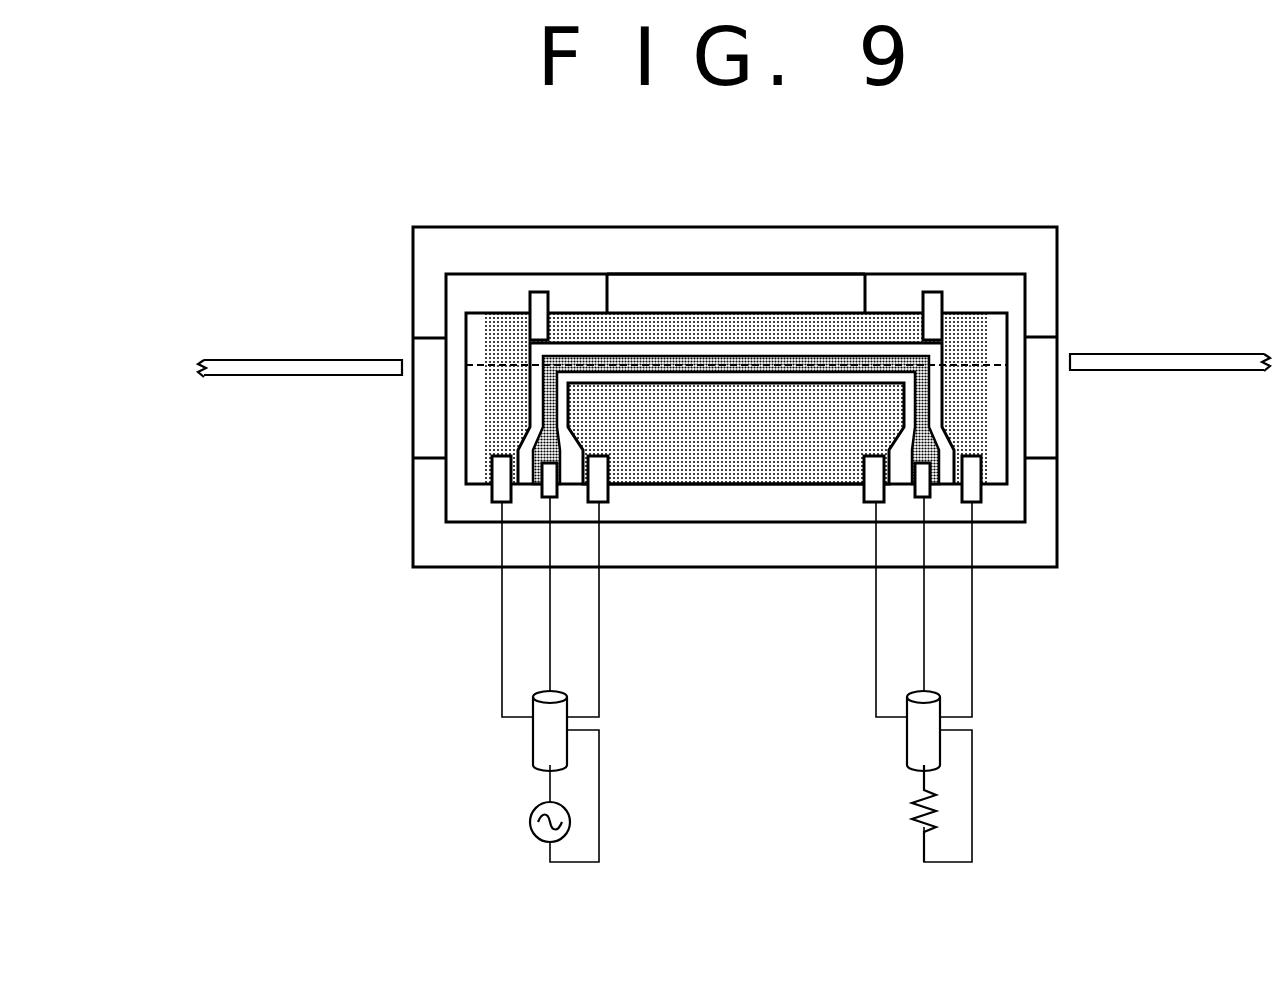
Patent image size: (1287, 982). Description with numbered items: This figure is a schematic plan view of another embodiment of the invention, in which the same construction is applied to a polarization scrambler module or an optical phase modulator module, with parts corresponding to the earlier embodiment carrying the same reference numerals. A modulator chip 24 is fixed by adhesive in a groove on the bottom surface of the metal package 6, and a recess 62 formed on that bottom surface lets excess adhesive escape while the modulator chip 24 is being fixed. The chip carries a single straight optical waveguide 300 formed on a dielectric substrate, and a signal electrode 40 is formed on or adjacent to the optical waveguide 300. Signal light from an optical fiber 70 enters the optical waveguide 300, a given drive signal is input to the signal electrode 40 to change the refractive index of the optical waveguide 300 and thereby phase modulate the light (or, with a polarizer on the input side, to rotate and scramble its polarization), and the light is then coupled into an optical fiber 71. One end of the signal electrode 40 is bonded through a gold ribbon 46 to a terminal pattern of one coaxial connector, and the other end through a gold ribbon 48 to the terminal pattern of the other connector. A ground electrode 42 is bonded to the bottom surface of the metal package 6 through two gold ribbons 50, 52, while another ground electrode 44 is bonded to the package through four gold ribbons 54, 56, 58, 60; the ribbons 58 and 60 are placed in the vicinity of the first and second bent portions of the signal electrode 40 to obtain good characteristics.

The metal package 6 is at (1032, 232).
The modulator chip 24 is at (1008, 397).
The signal electrode 40 is at (686, 357).
The ground electrode 42 is at (690, 470).
The ground electrode 44 is at (650, 320).
The gold ribbon 46 is at (546, 497).
The gold ribbon 48 is at (921, 497).
The gold ribbon 50 is at (601, 502).
The gold ribbon 52 is at (872, 502).
The gold ribbon 54 is at (496, 502).
The gold ribbon 56 is at (977, 502).
The gold ribbon 58 is at (537, 292).
The gold ribbon 60 is at (933, 292).
The recess 62 is at (735, 283).
The optical fiber 70 is at (240, 361).
The optical fiber 71 is at (1226, 355).
The optical waveguide 300 is at (990, 363).